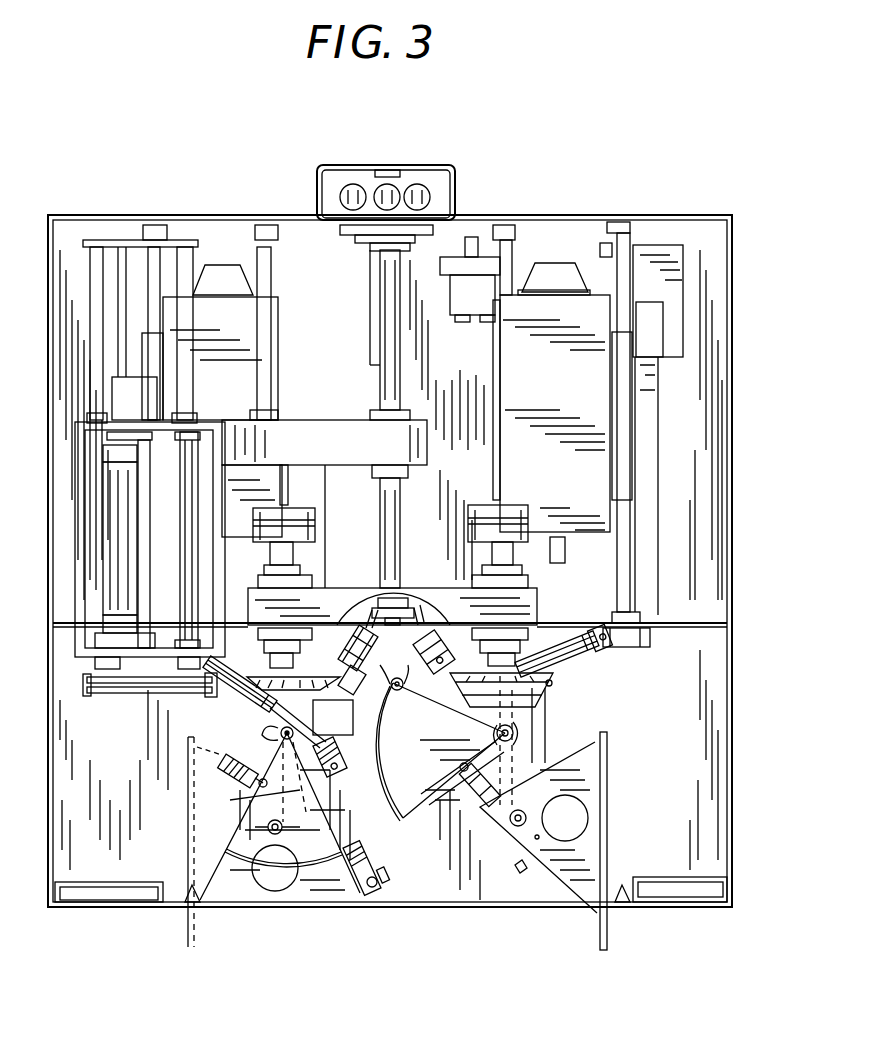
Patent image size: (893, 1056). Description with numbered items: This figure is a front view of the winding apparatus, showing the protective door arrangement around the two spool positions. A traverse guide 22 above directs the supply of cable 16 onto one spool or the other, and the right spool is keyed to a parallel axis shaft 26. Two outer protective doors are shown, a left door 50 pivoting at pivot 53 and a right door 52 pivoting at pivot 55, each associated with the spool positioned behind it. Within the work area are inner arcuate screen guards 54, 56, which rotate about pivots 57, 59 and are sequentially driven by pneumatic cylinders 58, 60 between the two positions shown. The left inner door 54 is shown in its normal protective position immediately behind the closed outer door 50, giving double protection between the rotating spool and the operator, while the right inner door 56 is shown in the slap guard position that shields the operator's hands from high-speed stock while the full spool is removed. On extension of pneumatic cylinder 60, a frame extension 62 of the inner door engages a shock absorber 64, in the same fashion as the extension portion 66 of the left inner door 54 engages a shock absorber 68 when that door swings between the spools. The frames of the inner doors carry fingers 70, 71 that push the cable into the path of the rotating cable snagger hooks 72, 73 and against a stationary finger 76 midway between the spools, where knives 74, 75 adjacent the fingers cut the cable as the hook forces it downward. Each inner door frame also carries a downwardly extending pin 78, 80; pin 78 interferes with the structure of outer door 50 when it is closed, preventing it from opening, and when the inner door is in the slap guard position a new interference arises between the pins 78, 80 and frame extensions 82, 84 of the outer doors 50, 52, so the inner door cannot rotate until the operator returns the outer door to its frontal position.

The cable 16 is at (542, 700).
The traverse guide 22 is at (90, 712).
The parallel axis shaft 26 is at (510, 772).
The left door 50 is at (300, 905).
The right door 52 is at (610, 833).
The pivot 53 is at (268, 831).
The inner arcuate screen guard 54 is at (258, 885).
The pivot 55 is at (522, 810).
The inner arcuate screen guard 56 is at (385, 790).
The pivot 57 is at (270, 732).
The pneumatic cylinder 58 is at (215, 698).
The pivot 59 is at (520, 735).
The pneumatic cylinder 60 is at (592, 660).
The frame extension of inner door 62 is at (338, 750).
The shock absorber 64 is at (367, 637).
The extension portion 66 is at (366, 862).
The shock absorber 68 is at (446, 655).
The finger 70 is at (378, 892).
The finger 71 is at (372, 688).
The cable snagger hook 72 is at (345, 670).
The cable snagger hook 73 is at (555, 685).
The knife 74 is at (388, 876).
The knife 75 is at (352, 646).
The stationary finger 76 is at (402, 690).
The pin 78 is at (242, 785).
The pin 80 is at (460, 766).
The frame extension 82 is at (197, 750).
The frame extension 84 is at (457, 790).